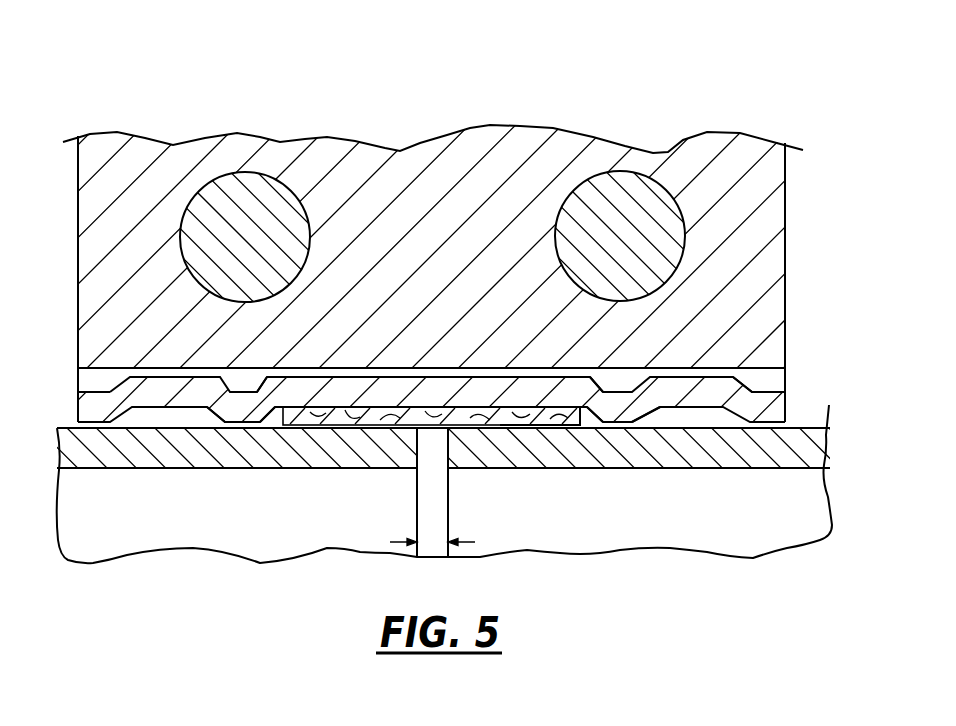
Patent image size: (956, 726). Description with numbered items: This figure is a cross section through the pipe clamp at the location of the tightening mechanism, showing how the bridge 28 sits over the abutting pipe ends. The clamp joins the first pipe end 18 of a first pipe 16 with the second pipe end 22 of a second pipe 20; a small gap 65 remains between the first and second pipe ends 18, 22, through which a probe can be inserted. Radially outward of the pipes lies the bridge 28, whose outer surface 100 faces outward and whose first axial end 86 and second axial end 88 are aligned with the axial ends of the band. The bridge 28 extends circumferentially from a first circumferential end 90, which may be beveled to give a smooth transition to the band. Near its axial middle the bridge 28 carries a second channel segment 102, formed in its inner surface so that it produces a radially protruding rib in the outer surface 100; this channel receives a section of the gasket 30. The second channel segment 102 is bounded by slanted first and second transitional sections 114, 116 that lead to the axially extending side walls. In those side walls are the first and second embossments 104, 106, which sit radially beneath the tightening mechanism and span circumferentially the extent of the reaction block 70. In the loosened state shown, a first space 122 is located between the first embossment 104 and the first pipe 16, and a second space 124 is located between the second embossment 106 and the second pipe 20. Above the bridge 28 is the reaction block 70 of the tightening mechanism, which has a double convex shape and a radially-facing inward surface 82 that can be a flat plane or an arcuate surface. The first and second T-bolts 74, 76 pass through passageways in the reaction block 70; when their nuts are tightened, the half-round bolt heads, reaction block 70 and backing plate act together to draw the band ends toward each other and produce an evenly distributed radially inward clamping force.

The reaction block 70 is at (766, 238).
The second T-bolt 76 is at (259, 251).
The first T-bolt 74 is at (634, 251).
The outer surface 100 is at (400, 377).
The second axial end 88 is at (78, 408).
The first axial end 86 is at (787, 410).
The bridge 28 is at (757, 383).
The radially-facing inward surface 82 is at (236, 369).
The second transitional section 116 is at (268, 403).
The first transitional section 114 is at (597, 392).
The second space 124 is at (205, 422).
The first embossment 104 is at (657, 406).
The first pipe 16 is at (720, 407).
The first space 122 is at (688, 418).
The first pipe end 18 is at (452, 445).
The second channel segment 102 is at (523, 426).
The second embossment 106 is at (152, 428).
The second pipe 20 is at (180, 453).
The first circumferential end 90 is at (707, 455).
The gasket 30 is at (432, 428).
The second pipe end 22 is at (417, 443).
The gap 65 is at (435, 543).